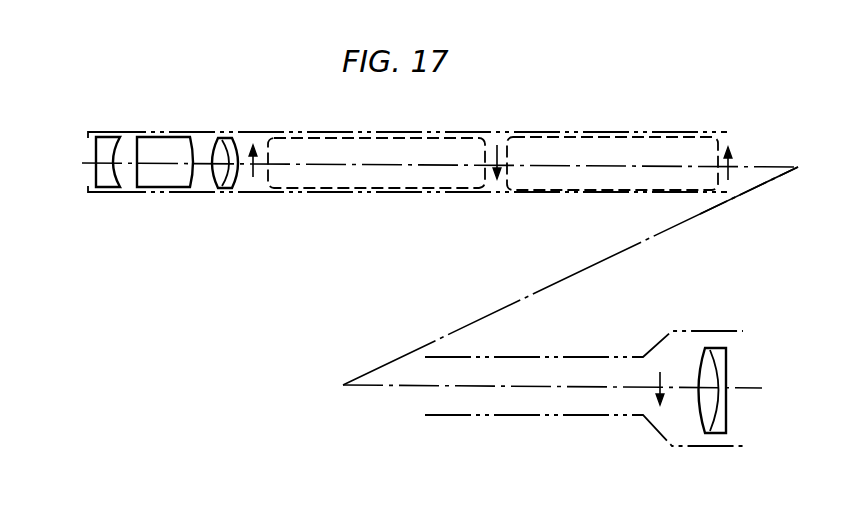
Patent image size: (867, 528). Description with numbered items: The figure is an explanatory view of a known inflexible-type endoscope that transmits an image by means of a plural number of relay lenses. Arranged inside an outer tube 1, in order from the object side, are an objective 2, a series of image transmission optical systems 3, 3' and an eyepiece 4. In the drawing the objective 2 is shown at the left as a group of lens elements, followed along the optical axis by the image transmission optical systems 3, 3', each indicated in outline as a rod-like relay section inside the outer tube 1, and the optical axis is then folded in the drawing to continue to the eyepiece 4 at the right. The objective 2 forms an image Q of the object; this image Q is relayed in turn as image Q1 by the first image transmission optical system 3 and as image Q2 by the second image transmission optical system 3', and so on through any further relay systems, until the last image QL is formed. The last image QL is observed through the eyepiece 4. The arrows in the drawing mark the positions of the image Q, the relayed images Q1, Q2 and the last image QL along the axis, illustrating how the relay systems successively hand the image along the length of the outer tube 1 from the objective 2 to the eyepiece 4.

The outer tube 1 is at (360, 194).
The objective 2 is at (240, 119).
The image transmission optical system 3 is at (376, 140).
The image transmission optical system 3' is at (612, 141).
The eyepiece 4 is at (710, 348).
The image of an object Q is at (252, 143).
The relayed image Q1 is at (496, 143).
The relayed image Q2 is at (728, 145).
The last image QL is at (660, 370).